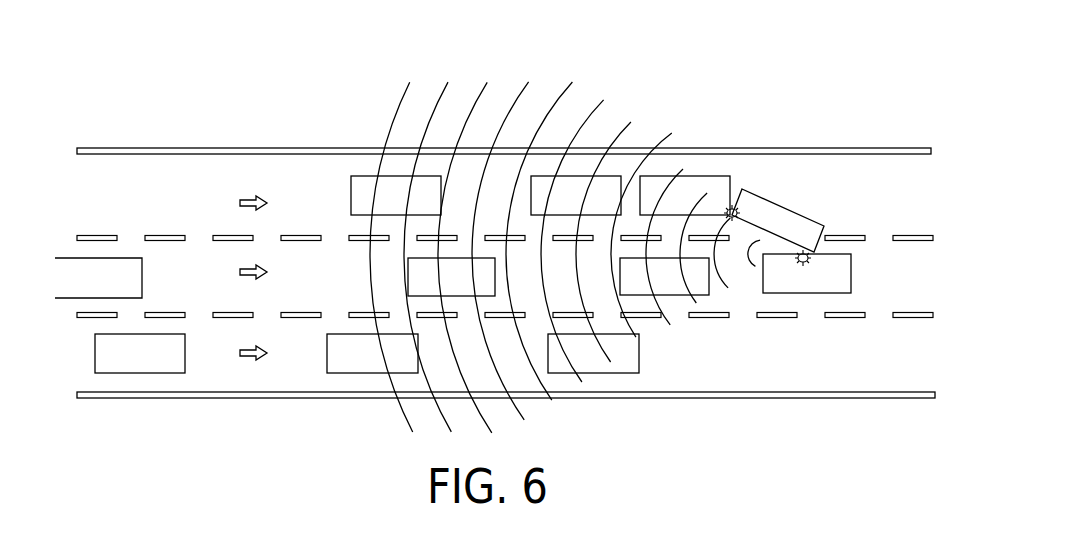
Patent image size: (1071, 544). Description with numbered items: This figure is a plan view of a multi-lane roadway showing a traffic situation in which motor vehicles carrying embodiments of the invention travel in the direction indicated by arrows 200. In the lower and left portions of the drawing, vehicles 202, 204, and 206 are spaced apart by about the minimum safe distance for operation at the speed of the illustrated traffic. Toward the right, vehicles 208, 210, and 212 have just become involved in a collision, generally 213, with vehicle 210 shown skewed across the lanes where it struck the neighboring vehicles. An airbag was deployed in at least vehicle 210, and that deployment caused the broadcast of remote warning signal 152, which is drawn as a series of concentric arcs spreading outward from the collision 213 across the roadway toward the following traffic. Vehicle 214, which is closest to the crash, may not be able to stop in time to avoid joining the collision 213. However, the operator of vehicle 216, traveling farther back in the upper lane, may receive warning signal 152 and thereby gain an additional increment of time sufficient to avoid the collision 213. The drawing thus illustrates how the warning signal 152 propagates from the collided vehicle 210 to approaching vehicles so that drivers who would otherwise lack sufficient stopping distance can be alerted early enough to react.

The remote warning signal 152 is at (400, 102).
The arrows 200 is at (252, 195).
The vehicle 202 is at (621, 368).
The vehicle 204 is at (355, 366).
The vehicle 206 is at (153, 363).
The vehicle 208 is at (713, 182).
The vehicle 210 is at (792, 223).
The vehicle 212 is at (840, 273).
The collision 213 is at (845, 104).
The vehicle 214 is at (571, 184).
The vehicle 216 is at (358, 186).